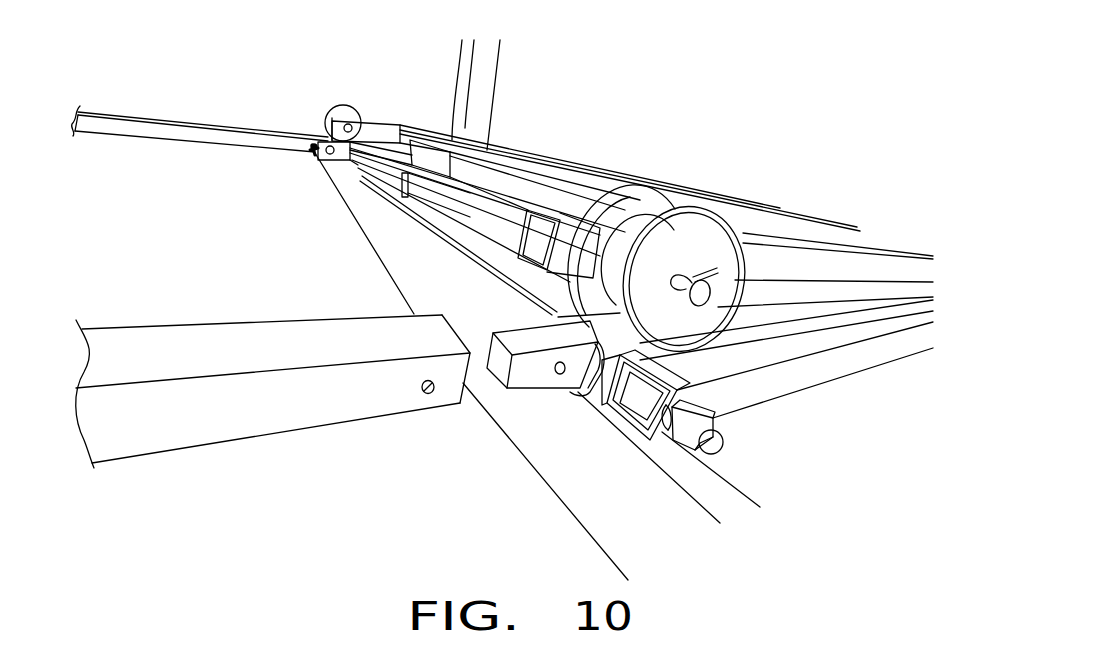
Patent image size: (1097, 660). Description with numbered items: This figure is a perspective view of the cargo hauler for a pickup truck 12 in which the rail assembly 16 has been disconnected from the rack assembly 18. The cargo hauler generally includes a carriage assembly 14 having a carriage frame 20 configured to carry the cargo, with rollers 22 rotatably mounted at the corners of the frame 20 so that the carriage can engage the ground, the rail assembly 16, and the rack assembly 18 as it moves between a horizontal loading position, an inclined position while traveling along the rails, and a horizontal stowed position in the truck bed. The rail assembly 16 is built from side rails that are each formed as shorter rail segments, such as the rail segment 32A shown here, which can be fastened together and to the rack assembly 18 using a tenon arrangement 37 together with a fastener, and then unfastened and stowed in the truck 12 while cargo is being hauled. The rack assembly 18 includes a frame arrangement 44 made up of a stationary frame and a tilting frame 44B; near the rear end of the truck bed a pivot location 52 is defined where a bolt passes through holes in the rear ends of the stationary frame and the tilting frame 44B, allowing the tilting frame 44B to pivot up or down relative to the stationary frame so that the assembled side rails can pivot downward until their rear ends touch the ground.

The pickup truck 12 is at (592, 510).
The carriage assembly 14 is at (433, 137).
The rail assembly 16 is at (186, 311).
The rack assembly 18 is at (373, 205).
The carriage frame 20 is at (500, 185).
The rollers 22 is at (643, 203).
The rail segment 32A is at (173, 133).
The tenon arrangement 37 is at (530, 378).
The frame arrangement 44 is at (358, 165).
The tilting frame 44B is at (315, 155).
The pivot location 52 is at (724, 452).